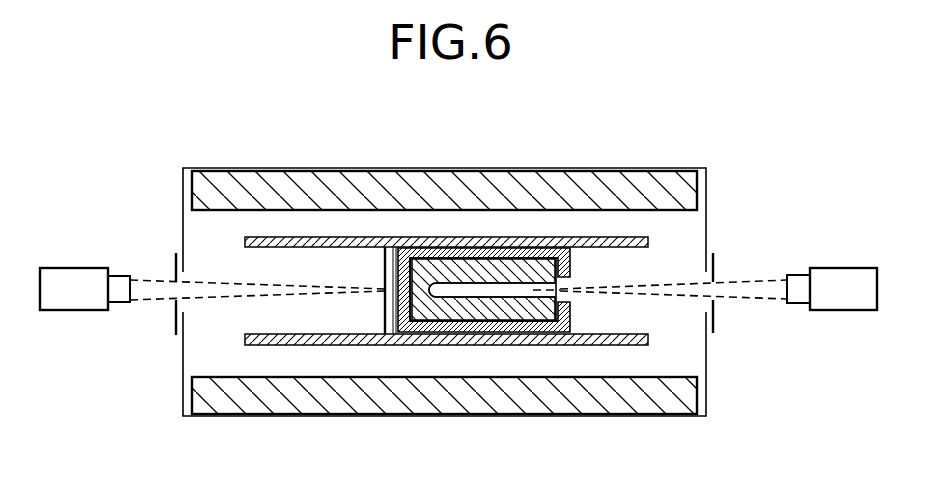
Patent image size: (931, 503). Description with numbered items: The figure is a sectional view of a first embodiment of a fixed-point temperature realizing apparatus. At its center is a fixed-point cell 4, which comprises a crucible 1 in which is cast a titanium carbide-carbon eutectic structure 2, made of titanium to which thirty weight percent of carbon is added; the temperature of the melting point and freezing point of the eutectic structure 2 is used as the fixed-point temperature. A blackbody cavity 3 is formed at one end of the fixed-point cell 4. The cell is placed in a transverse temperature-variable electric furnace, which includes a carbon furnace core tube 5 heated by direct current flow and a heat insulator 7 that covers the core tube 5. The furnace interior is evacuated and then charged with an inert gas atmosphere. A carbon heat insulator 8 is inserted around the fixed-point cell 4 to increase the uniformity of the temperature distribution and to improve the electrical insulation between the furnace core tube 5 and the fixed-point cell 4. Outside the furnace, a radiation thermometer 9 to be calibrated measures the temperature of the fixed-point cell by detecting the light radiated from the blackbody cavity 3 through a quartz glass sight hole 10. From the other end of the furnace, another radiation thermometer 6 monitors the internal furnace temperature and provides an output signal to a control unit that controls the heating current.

The crucible 1 is at (432, 250).
The carbide-carbon eutectic structure 2 is at (478, 257).
The blackbody cavity 3 is at (524, 300).
The fixed-point cell 4 is at (533, 250).
The carbon furnace core tube 5 is at (311, 237).
The radiation thermometer 6 is at (81, 270).
The heat insulator 7 is at (318, 406).
The carbon heat insulator 8 is at (483, 330).
The radiation thermometer 9 is at (842, 268).
The quartz glass sight hole 10 is at (177, 325).